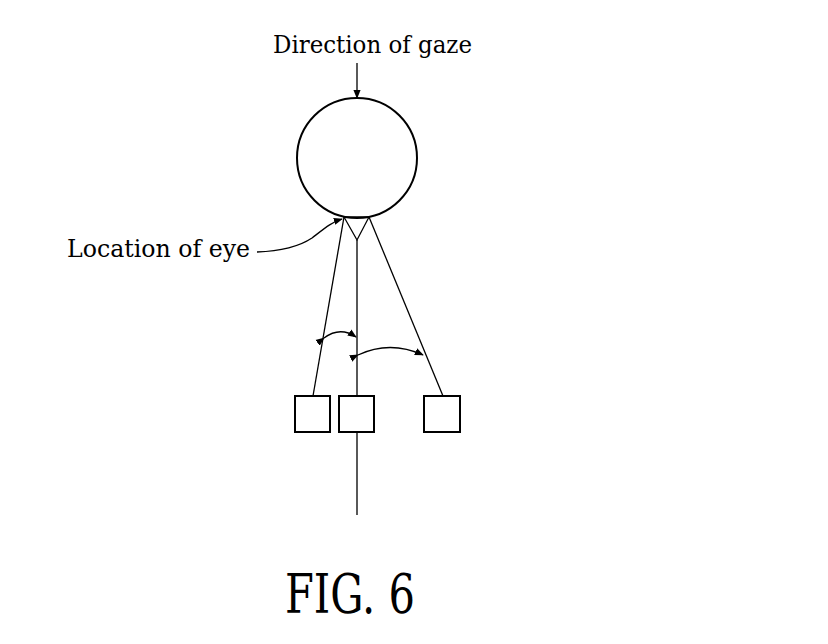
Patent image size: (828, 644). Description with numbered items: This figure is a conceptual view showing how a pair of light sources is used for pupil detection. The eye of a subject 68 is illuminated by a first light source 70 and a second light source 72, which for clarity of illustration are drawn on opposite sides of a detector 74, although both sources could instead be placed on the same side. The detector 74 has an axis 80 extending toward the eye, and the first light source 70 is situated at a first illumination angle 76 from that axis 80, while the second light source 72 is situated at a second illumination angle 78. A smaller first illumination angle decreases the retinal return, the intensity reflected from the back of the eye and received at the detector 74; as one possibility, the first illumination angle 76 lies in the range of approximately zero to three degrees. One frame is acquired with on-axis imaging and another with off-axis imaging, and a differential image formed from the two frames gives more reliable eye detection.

The subject 68 is at (295, 158).
The first light source 70 is at (294, 413).
The second light source 72 is at (461, 413).
The detector 74 is at (351, 434).
The first illumination angle 76 is at (338, 333).
The second illumination angle 78 is at (392, 349).
The axis 80 is at (357, 498).